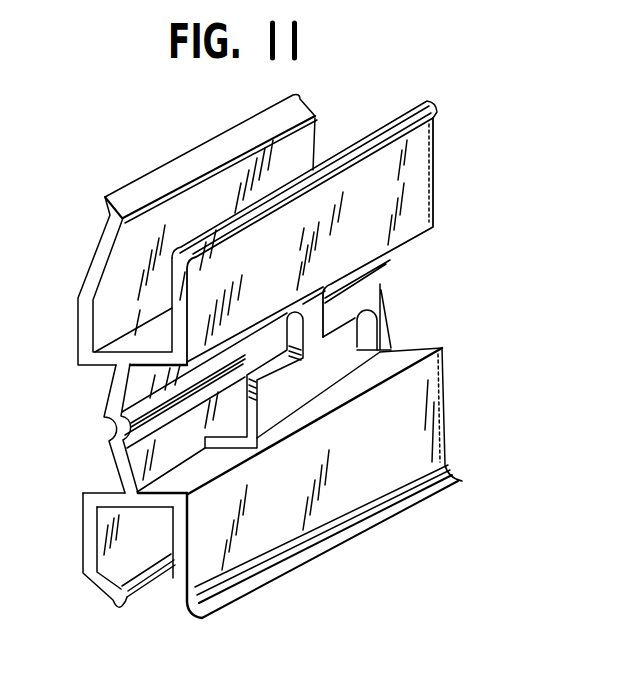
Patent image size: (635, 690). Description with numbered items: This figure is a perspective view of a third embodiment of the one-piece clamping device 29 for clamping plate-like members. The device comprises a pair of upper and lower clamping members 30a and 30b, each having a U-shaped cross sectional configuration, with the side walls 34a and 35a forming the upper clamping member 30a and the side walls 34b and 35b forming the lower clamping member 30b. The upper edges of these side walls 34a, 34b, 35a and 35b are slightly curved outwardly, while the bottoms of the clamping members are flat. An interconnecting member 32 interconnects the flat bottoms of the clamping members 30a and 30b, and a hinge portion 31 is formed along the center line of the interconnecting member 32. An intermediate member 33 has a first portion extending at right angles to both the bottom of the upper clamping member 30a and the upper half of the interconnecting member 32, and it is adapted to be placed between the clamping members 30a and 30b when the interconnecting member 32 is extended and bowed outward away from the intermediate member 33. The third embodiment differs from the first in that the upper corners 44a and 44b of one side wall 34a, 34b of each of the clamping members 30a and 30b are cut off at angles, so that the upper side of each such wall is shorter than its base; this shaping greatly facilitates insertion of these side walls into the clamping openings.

The one-piece clamping device 29 is at (103, 376).
The upper clamping member 30a is at (403, 170).
The lower clamping member 30b is at (422, 388).
The hinge portion 31 is at (115, 431).
The interconnecting member 32 is at (147, 447).
The intermediate member 33 is at (295, 323).
The side wall 34a is at (162, 180).
The side wall 34b is at (134, 604).
The side wall 35a is at (342, 151).
The side wall 35b is at (279, 538).
The upper corner 44a is at (93, 257).
The upper corner 44b is at (100, 580).